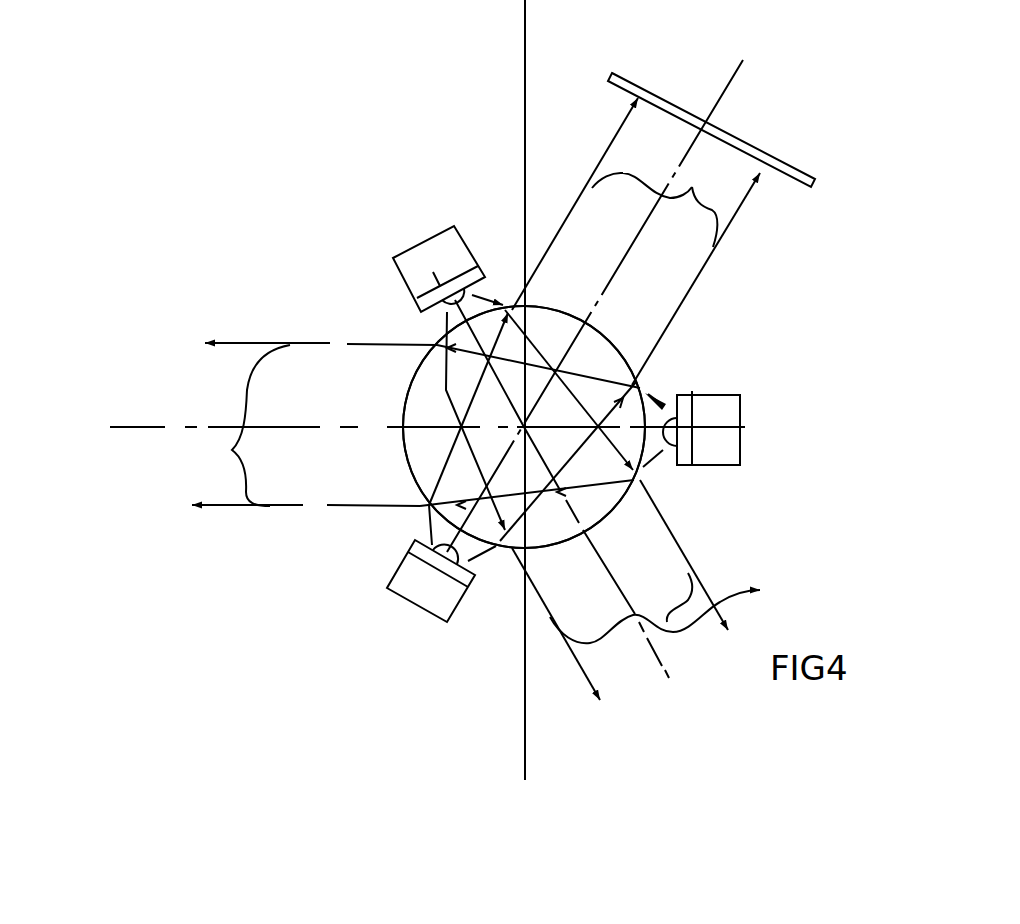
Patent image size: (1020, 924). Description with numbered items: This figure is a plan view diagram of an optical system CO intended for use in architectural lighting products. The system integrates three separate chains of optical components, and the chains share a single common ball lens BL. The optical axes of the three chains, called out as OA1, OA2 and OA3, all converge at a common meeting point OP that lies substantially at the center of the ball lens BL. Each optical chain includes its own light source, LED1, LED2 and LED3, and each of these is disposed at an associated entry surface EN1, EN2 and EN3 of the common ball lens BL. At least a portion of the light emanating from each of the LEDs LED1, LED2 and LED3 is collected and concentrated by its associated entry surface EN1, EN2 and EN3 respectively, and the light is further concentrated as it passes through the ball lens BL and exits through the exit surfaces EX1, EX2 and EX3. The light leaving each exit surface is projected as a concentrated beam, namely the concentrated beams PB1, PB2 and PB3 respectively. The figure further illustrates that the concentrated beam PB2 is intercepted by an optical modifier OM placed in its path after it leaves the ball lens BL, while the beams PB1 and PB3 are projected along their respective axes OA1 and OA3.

The ball lens BL is at (405, 380).
The common meeting point OP is at (543, 422).
The optical axis OA1 is at (153, 425).
The optical axis OA2 is at (732, 83).
The optical axis OA3 is at (655, 660).
The LED LED1 is at (674, 400).
The LED LED2 is at (422, 542).
The LED LED3 is at (415, 332).
The entry surface EN1 is at (647, 450).
The entry surface EN2 is at (478, 558).
The entry surface EN3 is at (477, 315).
The exit surface EX1 is at (405, 437).
The exit surface EX2 is at (610, 338).
The exit surface EX3 is at (643, 483).
The concentrated beam PB1 is at (301, 424).
The concentrated beam PB2 is at (692, 187).
The concentrated beam PB3 is at (661, 590).
The optical modifier OM is at (683, 105).
The optical system CO is at (910, 261).